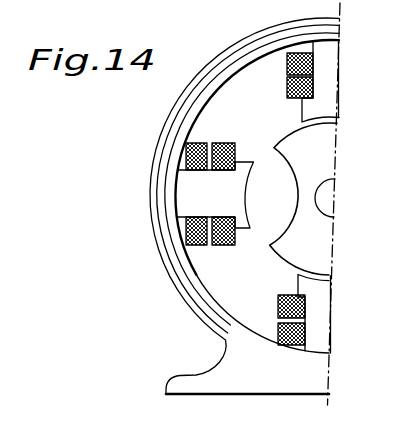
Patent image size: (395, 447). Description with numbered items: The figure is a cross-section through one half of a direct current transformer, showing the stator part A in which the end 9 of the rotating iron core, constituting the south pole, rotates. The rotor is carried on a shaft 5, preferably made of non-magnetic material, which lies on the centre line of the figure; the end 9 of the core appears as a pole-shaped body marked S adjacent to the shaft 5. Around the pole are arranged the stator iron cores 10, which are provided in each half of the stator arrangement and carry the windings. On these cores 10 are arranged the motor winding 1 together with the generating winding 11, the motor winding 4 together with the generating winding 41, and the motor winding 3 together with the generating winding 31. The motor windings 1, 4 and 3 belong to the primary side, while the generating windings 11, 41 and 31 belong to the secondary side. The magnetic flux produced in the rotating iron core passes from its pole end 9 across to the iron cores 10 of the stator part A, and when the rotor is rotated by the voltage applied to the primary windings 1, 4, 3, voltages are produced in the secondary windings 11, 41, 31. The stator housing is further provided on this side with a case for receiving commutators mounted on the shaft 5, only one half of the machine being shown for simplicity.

The stator part A is at (244, 201).
The iron core 10 is at (332, 60).
The motor winding 1 is at (287, 88).
The generating winding 11 is at (287, 62).
The motor winding 4 is at (222, 142).
The generating winding 41 is at (187, 232).
The motor winding 3 is at (278, 303).
The generating winding 31 is at (282, 335).
The end of the iron core 9 is at (285, 250).
The rotor body S is at (316, 153).
The shaft 5 is at (328, 202).